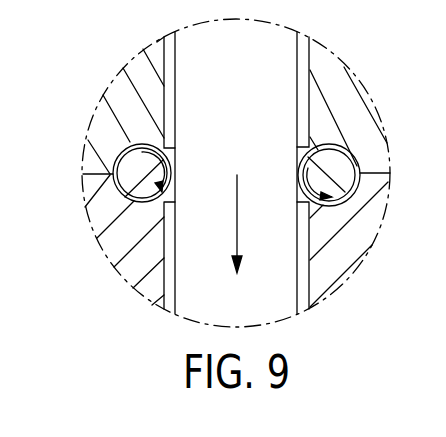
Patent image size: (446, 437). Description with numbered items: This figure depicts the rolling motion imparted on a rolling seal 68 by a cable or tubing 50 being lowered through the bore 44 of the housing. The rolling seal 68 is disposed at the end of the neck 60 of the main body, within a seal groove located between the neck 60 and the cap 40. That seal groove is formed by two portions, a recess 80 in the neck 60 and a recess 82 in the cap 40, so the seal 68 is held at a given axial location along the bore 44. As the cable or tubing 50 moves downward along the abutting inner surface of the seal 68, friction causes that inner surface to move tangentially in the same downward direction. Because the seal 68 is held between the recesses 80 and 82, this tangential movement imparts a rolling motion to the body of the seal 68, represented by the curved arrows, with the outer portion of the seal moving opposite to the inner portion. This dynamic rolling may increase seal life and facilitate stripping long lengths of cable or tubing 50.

The cap 40 is at (142, 64).
The bore 44 is at (164, 90).
The cable or tubing 50 is at (283, 105).
The neck 60 is at (123, 279).
The rolling seal 68 is at (102, 233).
The recess 80 is at (112, 180).
The recess 82 is at (113, 153).